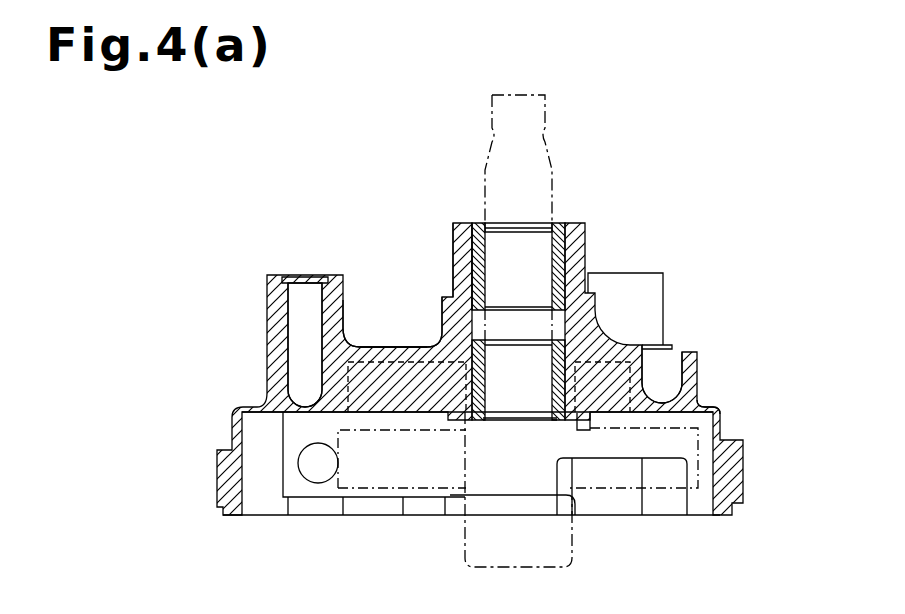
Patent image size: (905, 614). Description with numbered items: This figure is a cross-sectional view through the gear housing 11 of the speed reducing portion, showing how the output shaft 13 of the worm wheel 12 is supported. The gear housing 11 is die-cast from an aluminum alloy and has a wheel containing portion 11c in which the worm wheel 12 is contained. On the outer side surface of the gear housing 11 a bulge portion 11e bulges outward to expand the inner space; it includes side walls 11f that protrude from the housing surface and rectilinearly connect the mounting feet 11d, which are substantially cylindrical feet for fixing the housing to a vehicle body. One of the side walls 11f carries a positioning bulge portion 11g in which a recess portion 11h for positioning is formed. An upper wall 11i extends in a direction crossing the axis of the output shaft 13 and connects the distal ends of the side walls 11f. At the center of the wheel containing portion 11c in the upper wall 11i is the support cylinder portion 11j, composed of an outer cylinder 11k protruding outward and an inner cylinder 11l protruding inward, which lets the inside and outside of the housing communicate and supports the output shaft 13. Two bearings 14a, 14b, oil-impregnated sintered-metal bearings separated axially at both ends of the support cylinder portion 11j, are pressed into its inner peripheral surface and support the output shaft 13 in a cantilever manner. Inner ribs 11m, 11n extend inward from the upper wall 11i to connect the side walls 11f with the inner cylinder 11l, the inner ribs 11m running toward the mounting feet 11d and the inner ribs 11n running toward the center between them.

The gear housing 11 is at (698, 349).
The wheel containing portion 11c is at (718, 408).
The mounting feet 11d is at (267, 330).
The bulge portion 11e is at (382, 345).
The side walls 11f is at (357, 400).
The positioning bulge portion 11g is at (697, 363).
The recess portion 11h is at (680, 352).
The upper wall 11i is at (399, 347).
The support cylinder portion 11j is at (455, 256).
The outer cylinder 11k is at (580, 254).
The inner cylinder 11l is at (555, 435).
The inner ribs 11m is at (420, 400).
The inner ribs 11n is at (613, 398).
The worm wheel 12 is at (697, 472).
The output shaft 13 is at (555, 178).
The bearing 14a is at (583, 237).
The bearing 14b is at (490, 400).